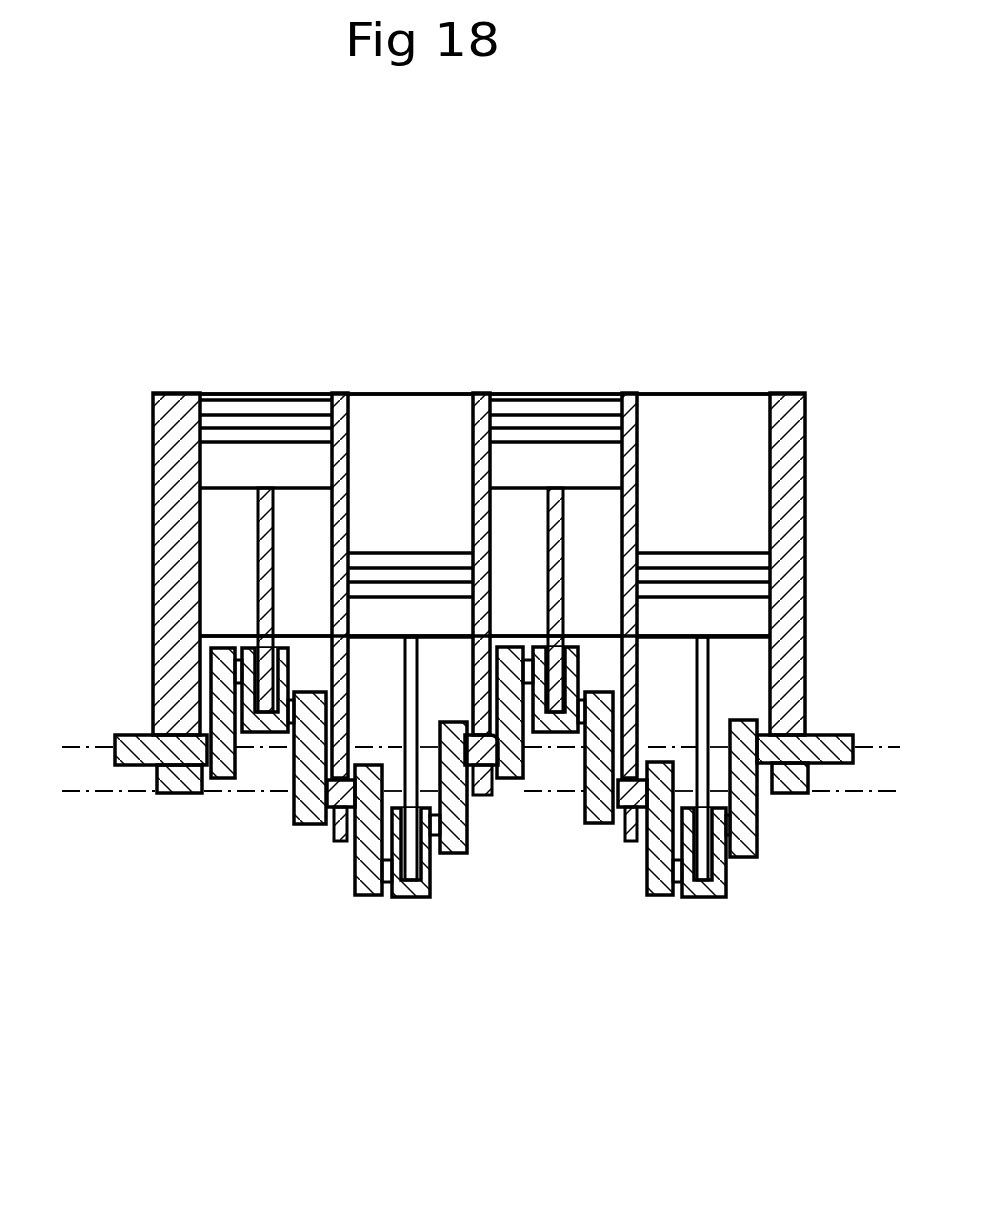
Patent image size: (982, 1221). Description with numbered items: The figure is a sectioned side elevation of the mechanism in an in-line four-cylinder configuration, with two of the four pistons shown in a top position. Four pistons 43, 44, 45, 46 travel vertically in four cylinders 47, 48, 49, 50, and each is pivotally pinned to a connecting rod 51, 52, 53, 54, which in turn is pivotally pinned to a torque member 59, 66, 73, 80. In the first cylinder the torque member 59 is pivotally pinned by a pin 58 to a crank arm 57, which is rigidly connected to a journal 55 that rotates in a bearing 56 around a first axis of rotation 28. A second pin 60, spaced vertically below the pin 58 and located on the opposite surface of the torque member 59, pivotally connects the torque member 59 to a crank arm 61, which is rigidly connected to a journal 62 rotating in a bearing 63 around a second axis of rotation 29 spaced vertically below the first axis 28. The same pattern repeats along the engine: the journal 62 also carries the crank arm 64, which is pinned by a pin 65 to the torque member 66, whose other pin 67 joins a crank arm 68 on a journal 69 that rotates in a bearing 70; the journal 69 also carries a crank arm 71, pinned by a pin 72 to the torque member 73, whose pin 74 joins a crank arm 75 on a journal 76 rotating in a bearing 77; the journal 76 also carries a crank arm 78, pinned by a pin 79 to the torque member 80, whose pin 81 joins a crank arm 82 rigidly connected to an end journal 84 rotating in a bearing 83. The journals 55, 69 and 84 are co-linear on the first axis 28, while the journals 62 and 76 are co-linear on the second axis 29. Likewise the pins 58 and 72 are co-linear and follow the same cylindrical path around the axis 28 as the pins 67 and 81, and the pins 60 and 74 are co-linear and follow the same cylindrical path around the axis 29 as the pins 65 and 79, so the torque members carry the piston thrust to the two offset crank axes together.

The first axis of rotation 28 is at (73, 743).
The second axis of rotation 29 is at (72, 795).
The piston 43 is at (243, 465).
The piston 44 is at (377, 620).
The piston 45 is at (515, 470).
The piston 46 is at (663, 617).
The cylinder 47 is at (308, 538).
The cylinder 48 is at (456, 467).
The cylinder 49 is at (597, 537).
The cylinder 50 is at (742, 457).
The connecting rod 51 is at (265, 537).
The connecting rod 52 is at (412, 690).
The connecting rod 53 is at (558, 535).
The connecting rod 54 is at (708, 717).
The journal 55 is at (140, 750).
The bearing 56 is at (188, 782).
The crank arm 57 is at (225, 678).
The pin 58 is at (238, 658).
The torque member 59 is at (268, 730).
The pin 60 is at (292, 730).
The crank arm 61 is at (303, 823).
The journal 62 is at (337, 807).
The bearing 63 is at (342, 841).
The crank arm 64 is at (370, 897).
The pin 65 is at (383, 885).
The torque member 66 is at (410, 897).
The pin 67 is at (435, 835).
The crank arm 68 is at (453, 853).
The journal 69 is at (470, 797).
The bearing 70 is at (492, 795).
The crank arm 71 is at (513, 780).
The pin 72 is at (530, 733).
The torque member 73 is at (555, 735).
The pin 74 is at (580, 825).
The crank arm 75 is at (598, 825).
The journal 76 is at (622, 808).
The bearing 77 is at (633, 842).
The crank arm 78 is at (662, 897).
The pin 79 is at (677, 897).
The torque member 80 is at (712, 897).
The pin 81 is at (727, 897).
The crank arm 82 is at (742, 850).
The bearing 83 is at (793, 797).
The journal 84 is at (800, 748).